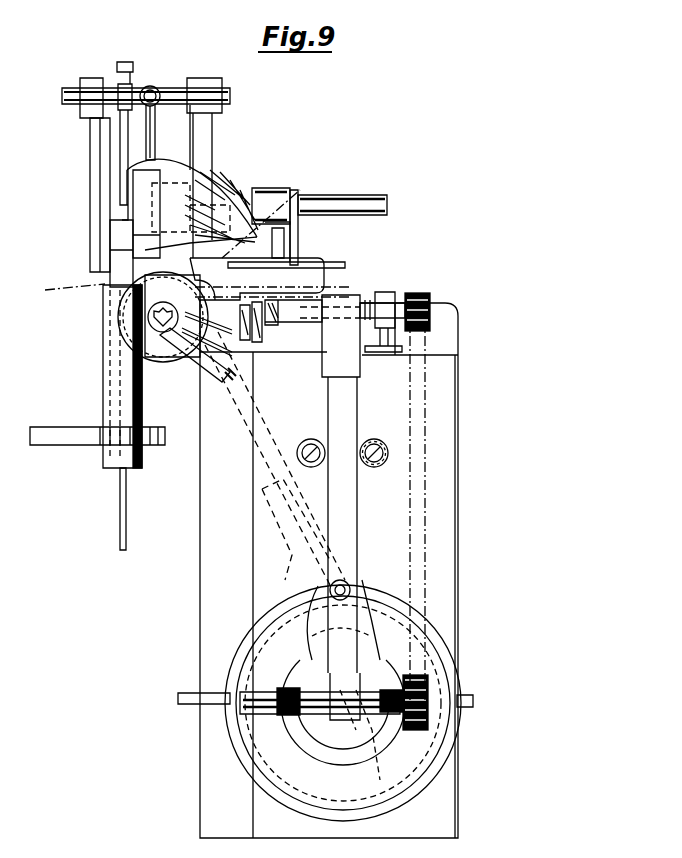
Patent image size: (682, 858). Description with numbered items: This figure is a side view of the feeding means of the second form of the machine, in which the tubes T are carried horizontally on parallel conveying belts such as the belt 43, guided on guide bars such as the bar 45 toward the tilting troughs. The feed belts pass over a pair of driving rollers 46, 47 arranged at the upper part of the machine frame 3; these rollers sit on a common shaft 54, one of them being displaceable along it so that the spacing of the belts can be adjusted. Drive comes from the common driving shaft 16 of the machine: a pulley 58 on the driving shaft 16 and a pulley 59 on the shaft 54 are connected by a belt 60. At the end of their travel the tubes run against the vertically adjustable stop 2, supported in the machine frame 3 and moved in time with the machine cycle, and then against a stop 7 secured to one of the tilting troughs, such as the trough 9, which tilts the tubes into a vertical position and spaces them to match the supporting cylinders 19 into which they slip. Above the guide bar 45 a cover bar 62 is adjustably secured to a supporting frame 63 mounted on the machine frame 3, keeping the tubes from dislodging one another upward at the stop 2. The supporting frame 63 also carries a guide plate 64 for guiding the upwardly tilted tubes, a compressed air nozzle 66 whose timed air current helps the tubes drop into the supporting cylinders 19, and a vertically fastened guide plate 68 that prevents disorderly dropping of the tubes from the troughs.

The supporting frame 63 is at (168, 88).
The guide plate 68 is at (97, 133).
The compressed air nozzle 66 is at (120, 162).
The guide plate 64 is at (200, 183).
The tubes T is at (300, 190).
The cover bar 62 is at (278, 222).
The stop 7 is at (305, 258).
The guide bar 45 is at (285, 300).
The tilting trough 9 is at (276, 298).
The shaft 54 is at (325, 308).
The stop 2 is at (362, 300).
The pulley 59 is at (432, 297).
The machine frame 3 is at (458, 406).
The supporting cylinder 19 is at (105, 340).
The driving roller 46 is at (205, 358).
The driving roller 47 is at (258, 335).
The conveying belt 43 is at (257, 330).
The belt 60 is at (425, 550).
The pulley 58 is at (428, 690).
The driving shaft 16 is at (270, 702).